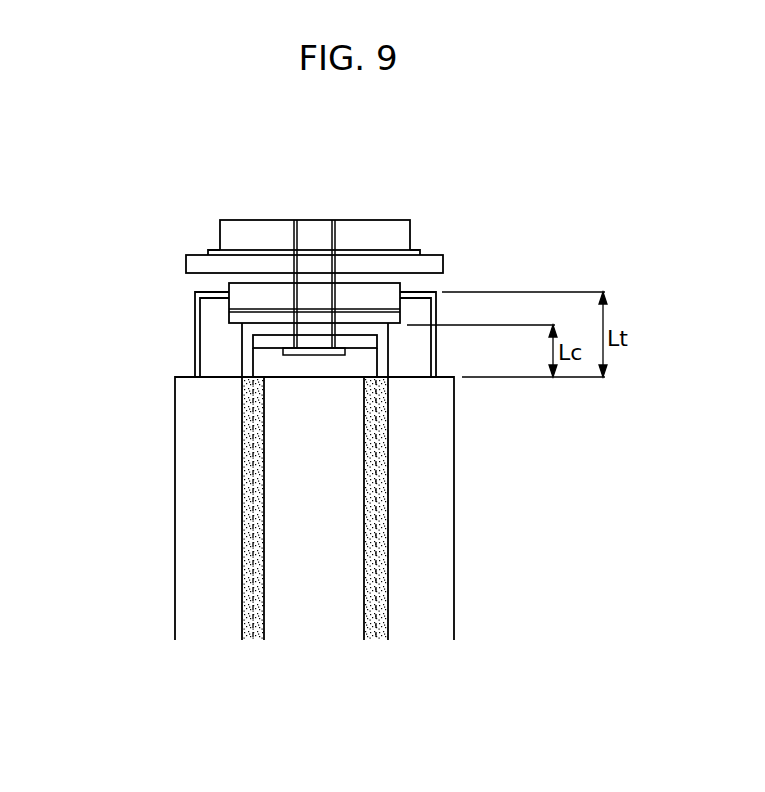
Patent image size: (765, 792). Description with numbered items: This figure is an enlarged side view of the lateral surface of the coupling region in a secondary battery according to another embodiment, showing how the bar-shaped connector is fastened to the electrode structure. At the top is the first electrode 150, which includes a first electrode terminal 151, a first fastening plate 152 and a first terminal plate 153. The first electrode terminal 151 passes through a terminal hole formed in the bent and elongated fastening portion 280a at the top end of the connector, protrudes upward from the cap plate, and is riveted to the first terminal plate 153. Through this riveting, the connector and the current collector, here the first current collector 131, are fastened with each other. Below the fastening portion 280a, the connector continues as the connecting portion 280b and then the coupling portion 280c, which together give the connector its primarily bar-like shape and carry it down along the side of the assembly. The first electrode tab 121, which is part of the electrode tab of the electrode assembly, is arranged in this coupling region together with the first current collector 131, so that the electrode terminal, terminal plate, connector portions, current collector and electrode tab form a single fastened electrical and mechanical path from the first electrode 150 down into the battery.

The first electrode 150 is at (372, 203).
The first electrode terminal 151 is at (313, 227).
The first fastening plate 152 is at (415, 252).
The first terminal plate 153 is at (247, 227).
The first current collector 131 is at (238, 290).
The first electrode tab 121 is at (195, 294).
The fastening portion 280a is at (273, 332).
The connecting portion 280b is at (382, 364).
The coupling portion 280c is at (383, 477).